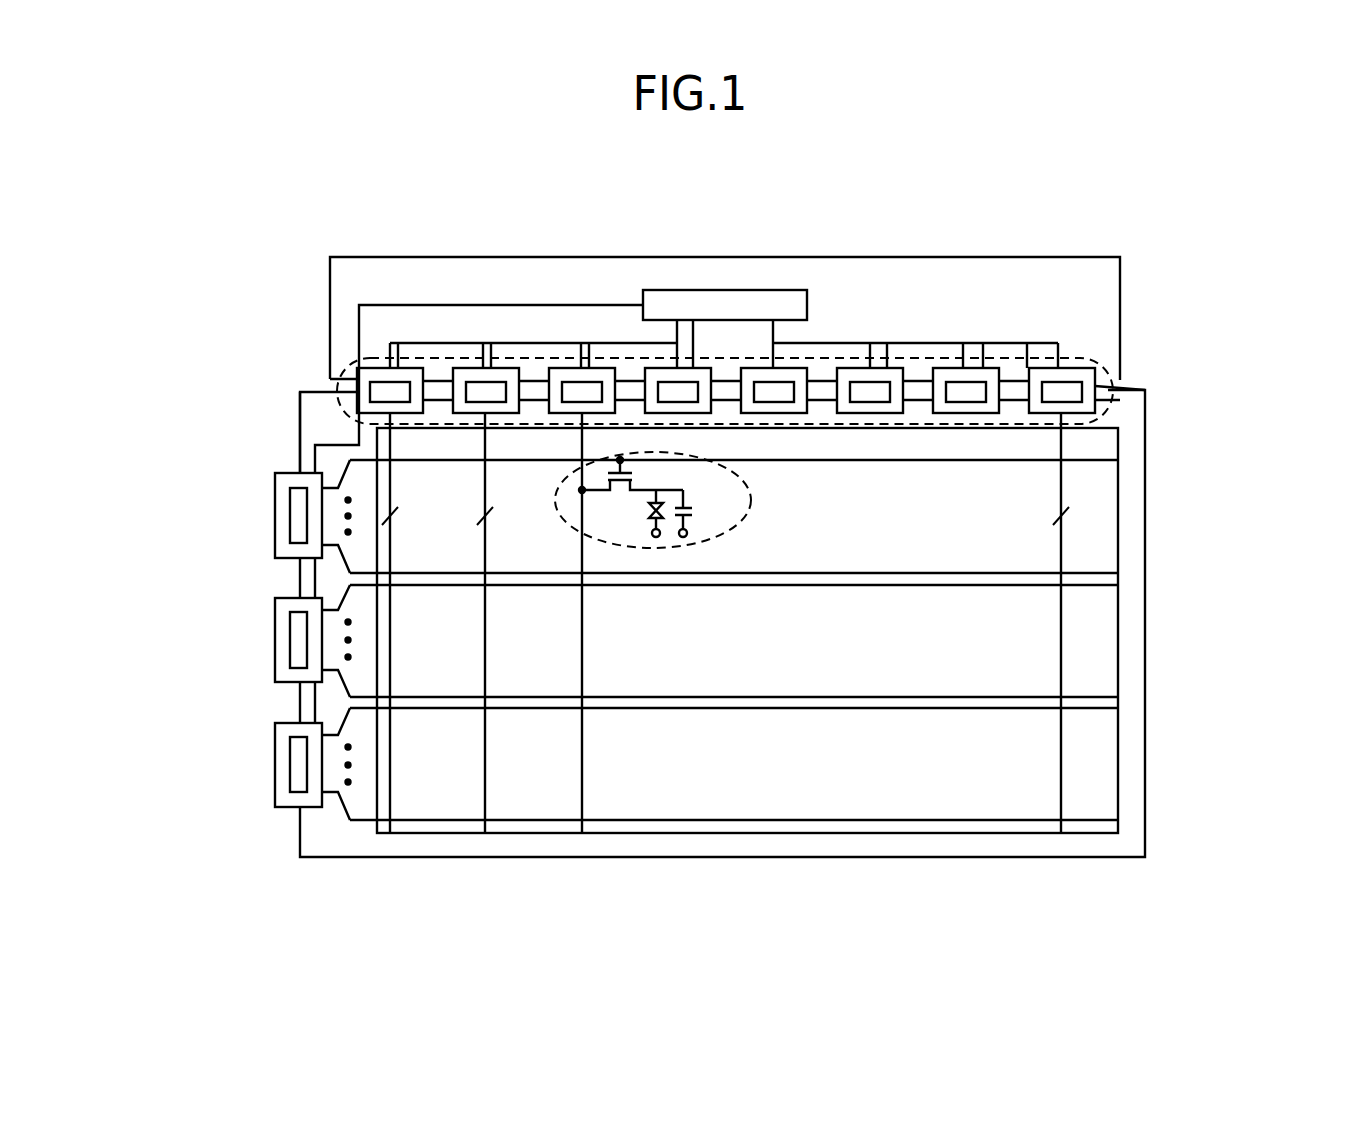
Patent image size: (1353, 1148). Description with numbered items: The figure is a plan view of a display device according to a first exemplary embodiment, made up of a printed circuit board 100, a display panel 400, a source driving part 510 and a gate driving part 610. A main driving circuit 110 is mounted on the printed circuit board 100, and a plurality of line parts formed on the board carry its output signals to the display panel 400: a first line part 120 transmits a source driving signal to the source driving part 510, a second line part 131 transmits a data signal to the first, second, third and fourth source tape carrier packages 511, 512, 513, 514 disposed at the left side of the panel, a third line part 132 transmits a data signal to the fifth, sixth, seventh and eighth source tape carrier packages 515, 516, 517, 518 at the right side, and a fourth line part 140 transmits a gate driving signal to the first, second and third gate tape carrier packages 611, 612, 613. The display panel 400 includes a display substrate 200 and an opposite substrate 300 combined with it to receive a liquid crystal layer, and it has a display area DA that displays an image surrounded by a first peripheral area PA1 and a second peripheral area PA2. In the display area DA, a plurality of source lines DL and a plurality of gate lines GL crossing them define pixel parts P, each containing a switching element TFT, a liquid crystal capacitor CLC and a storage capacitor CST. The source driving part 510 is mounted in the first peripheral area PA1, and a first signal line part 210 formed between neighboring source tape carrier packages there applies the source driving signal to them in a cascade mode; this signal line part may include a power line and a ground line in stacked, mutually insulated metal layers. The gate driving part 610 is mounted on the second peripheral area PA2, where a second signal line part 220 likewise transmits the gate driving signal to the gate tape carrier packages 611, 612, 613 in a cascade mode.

The printed circuit board 100 is at (847, 257).
The main driving circuit 110 is at (722, 290).
The first line part 120 is at (677, 345).
The second line part 131 is at (547, 343).
The third line part 132 is at (1027, 343).
The fourth line part 140 is at (359, 325).
The display substrate 200 is at (1145, 462).
The first signal line part 210 is at (915, 413).
The second signal line part 220 is at (300, 462).
The opposite substrate 300 is at (1118, 506).
The display panel 400 is at (1215, 447).
The source driving part 510 is at (346, 360).
The first source tape carrier package 511 is at (708, 363).
The second source tape carrier package 512 is at (597, 366).
The third source tape carrier package 513 is at (501, 366).
The fourth source tape carrier package 514 is at (405, 366).
The fifth source tape carrier package 515 is at (803, 365).
The sixth source tape carrier package 516 is at (892, 366).
The seventh source tape carrier package 517 is at (982, 366).
The eighth source tape carrier package 518 is at (1075, 366).
The gate driving part 610 is at (244, 640).
The first gate tape carrier package 611 is at (275, 516).
The second gate tape carrier package 612 is at (275, 640).
The third gate tape carrier package 613 is at (276, 764).
The first peripheral area PA1 is at (1133, 411).
The second peripheral area PA2 is at (313, 843).
The display area DA is at (722, 647).
The gate line GL is at (850, 460).
The source line DL is at (583, 766).
The pixel part P is at (675, 500).
The switching element TFT is at (631, 475).
The liquid crystal capacitor CLC is at (631, 513).
The storage capacitor CST is at (704, 513).